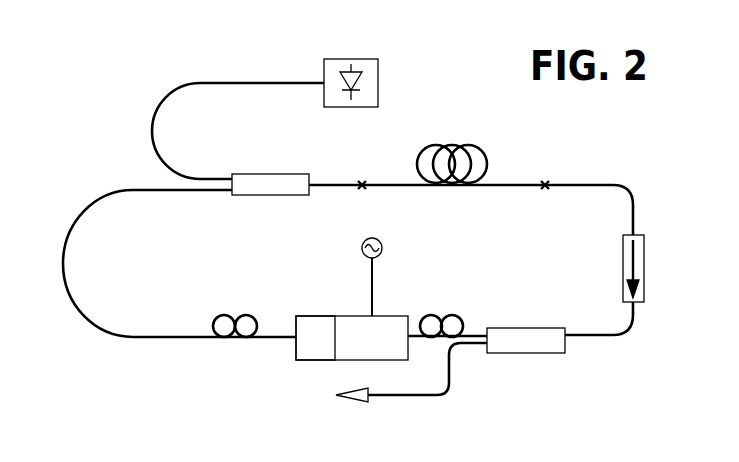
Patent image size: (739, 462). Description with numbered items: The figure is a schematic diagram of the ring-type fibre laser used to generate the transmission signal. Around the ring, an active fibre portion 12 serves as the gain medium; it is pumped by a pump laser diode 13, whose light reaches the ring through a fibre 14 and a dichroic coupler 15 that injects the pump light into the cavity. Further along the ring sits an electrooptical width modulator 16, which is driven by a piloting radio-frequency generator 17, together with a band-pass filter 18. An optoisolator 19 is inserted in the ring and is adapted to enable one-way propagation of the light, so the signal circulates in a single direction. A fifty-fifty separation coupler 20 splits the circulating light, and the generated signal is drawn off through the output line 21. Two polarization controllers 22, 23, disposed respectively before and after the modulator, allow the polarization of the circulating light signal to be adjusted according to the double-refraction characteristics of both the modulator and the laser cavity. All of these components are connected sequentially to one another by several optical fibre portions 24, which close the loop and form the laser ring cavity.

The active fibre portion 12 is at (470, 146).
The pump laser diode 13 is at (378, 70).
The fibre 14 is at (163, 98).
The dichroic coupler 15 is at (295, 188).
The electrooptical width modulator 16 is at (353, 342).
The piloting radio-frequency generator 17 is at (381, 243).
The band-pass filter 18 is at (300, 360).
The optoisolator 19 is at (645, 272).
The 50/50-separation coupler 20 is at (533, 353).
The output line 21 is at (405, 397).
The polarization controller 22 is at (243, 314).
The polarization controller 23 is at (456, 314).
The optical fibre portions 24 is at (66, 279).